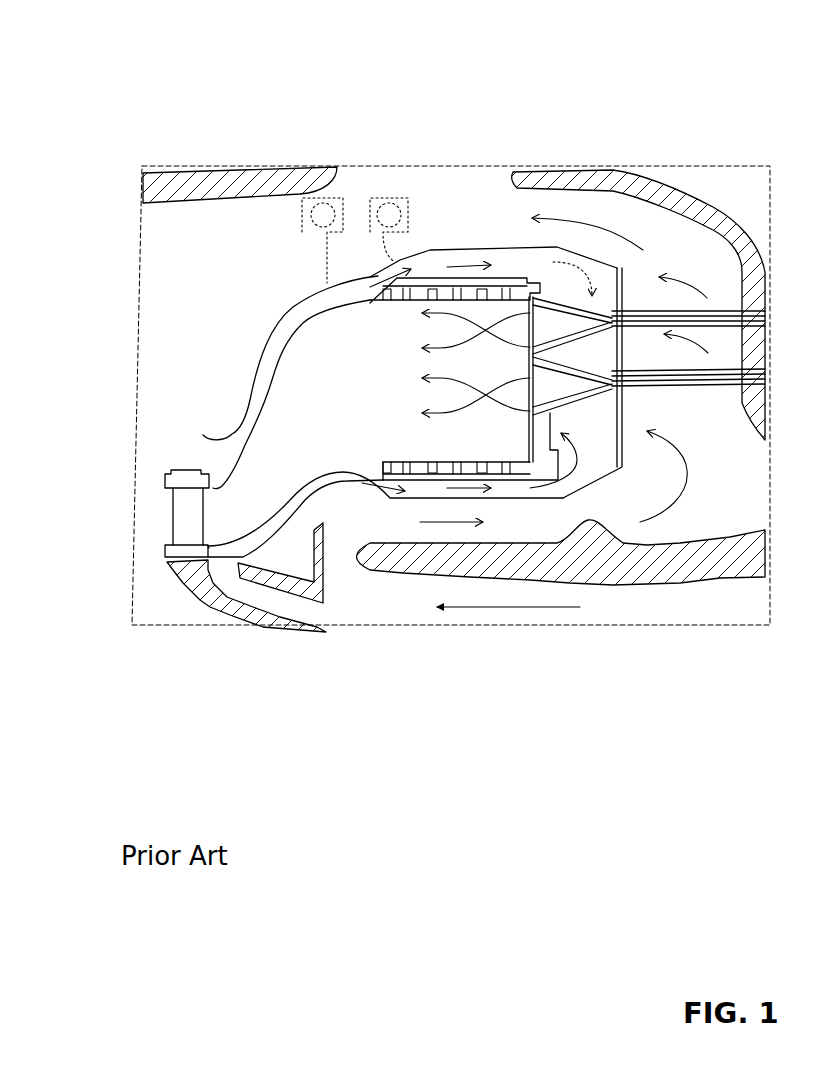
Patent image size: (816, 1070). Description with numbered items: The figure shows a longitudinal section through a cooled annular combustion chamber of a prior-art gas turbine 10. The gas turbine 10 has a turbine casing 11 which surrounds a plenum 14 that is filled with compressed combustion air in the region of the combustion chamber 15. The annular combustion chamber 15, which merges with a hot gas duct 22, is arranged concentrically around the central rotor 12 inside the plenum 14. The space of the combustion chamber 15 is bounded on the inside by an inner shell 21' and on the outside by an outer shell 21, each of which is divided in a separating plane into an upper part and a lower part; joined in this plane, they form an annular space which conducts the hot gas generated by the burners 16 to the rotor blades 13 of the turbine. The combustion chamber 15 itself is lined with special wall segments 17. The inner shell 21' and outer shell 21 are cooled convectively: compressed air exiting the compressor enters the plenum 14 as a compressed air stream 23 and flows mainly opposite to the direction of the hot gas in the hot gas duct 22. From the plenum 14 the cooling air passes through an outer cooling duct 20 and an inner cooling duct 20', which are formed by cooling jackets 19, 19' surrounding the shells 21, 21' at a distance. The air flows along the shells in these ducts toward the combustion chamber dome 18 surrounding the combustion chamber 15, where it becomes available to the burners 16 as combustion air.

The gas turbine 10 is at (216, 134).
The turbine casing 11 is at (702, 212).
The central rotor 12 is at (213, 598).
The rotor blades 13 is at (184, 516).
The plenum 14 is at (743, 491).
The annular combustion chamber 15 is at (484, 370).
The burners 16 is at (570, 385).
The wall segments 17 is at (468, 282).
The combustion chamber dome 18 is at (600, 483).
The outer cooling jacket 19 is at (460, 155).
The inner cooling jacket 19' is at (414, 629).
The outer cooling duct 20 is at (193, 339).
The inner cooling duct 20' is at (295, 628).
The outer shell 21 is at (189, 394).
The inner shell 21' is at (285, 494).
The hot gas duct 22 is at (297, 472).
The compressed air stream 23 is at (537, 608).